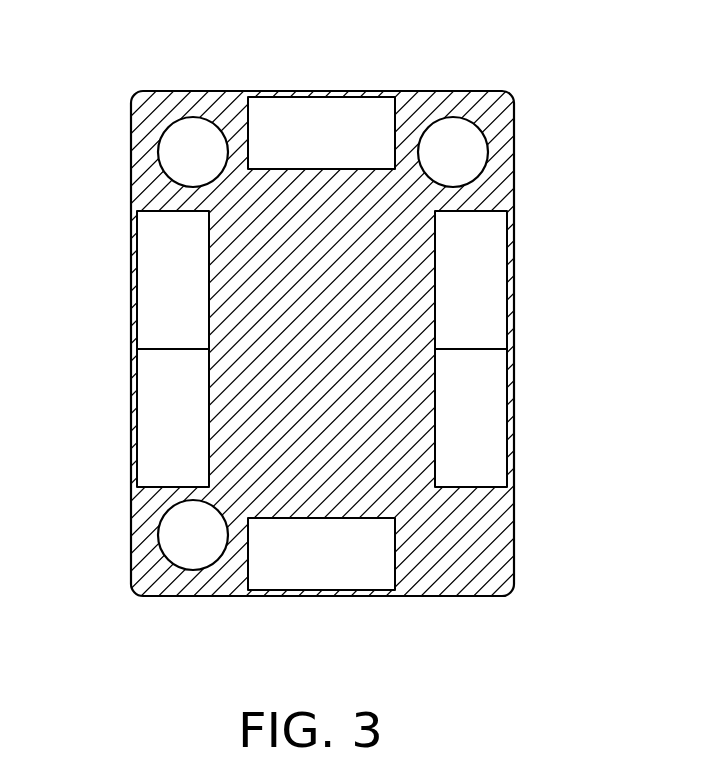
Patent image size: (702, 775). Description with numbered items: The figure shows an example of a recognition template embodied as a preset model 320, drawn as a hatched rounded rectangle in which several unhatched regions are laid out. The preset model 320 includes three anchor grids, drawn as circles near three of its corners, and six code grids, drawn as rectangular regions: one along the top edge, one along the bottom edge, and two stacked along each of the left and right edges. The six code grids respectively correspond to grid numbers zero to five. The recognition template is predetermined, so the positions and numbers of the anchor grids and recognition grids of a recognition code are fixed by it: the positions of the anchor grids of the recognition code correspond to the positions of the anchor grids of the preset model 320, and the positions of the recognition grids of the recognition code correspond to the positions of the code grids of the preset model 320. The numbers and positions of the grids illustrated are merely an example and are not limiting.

The preset model 320 is at (473, 77).